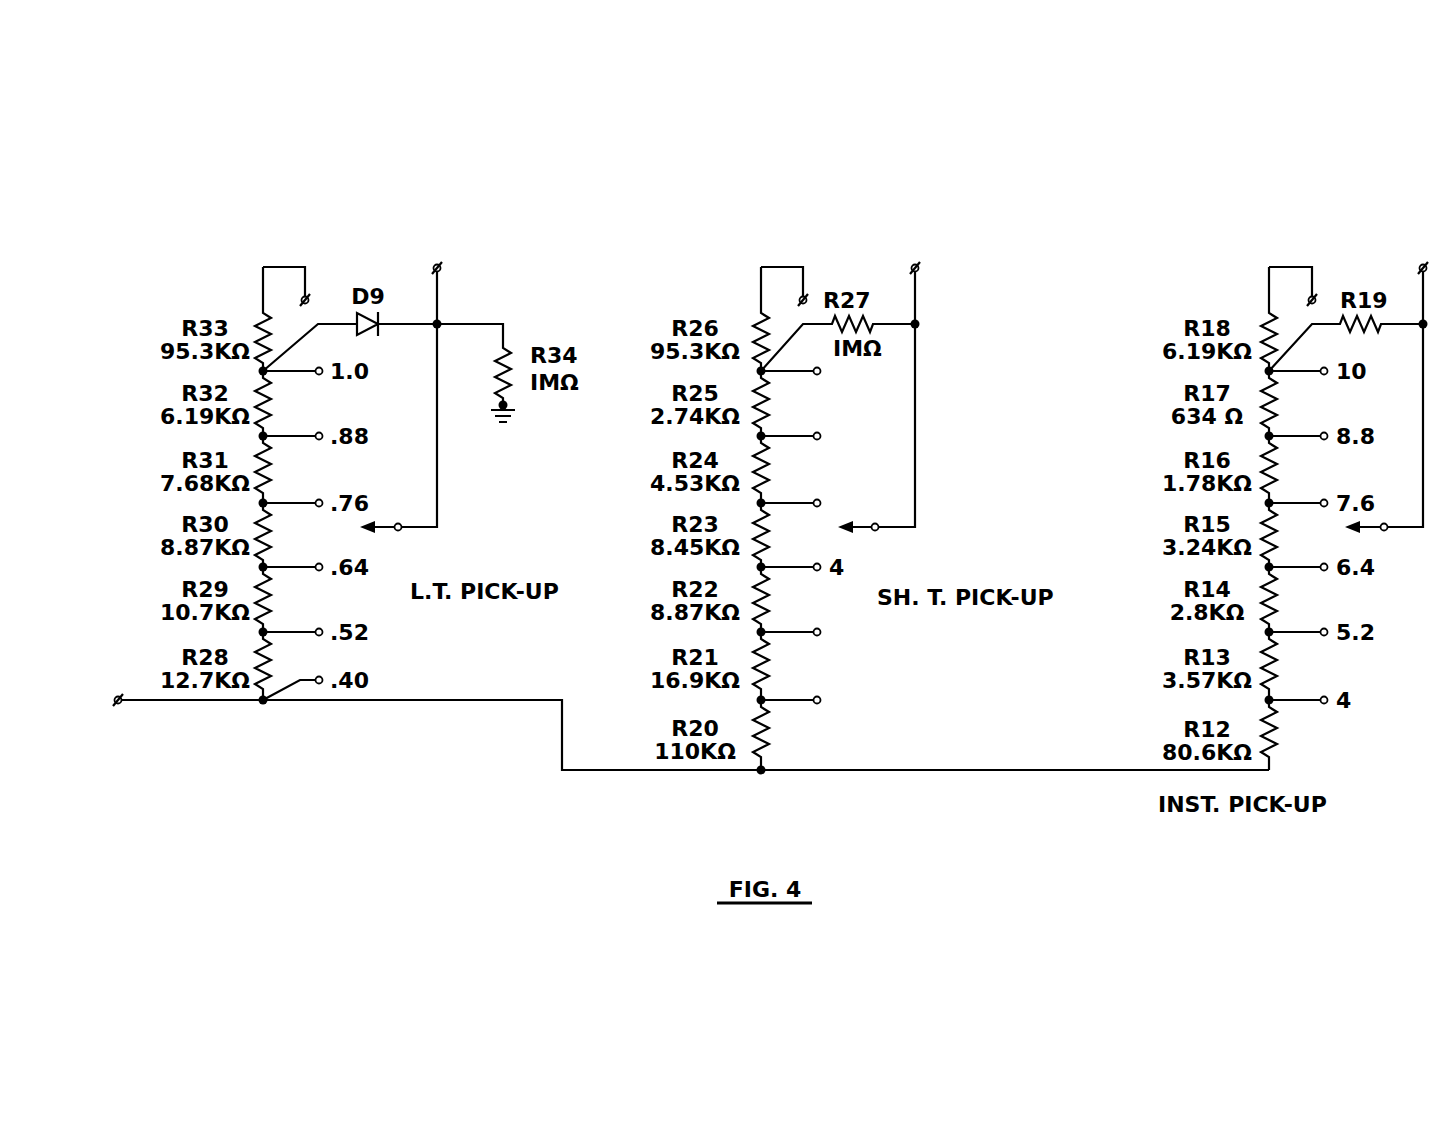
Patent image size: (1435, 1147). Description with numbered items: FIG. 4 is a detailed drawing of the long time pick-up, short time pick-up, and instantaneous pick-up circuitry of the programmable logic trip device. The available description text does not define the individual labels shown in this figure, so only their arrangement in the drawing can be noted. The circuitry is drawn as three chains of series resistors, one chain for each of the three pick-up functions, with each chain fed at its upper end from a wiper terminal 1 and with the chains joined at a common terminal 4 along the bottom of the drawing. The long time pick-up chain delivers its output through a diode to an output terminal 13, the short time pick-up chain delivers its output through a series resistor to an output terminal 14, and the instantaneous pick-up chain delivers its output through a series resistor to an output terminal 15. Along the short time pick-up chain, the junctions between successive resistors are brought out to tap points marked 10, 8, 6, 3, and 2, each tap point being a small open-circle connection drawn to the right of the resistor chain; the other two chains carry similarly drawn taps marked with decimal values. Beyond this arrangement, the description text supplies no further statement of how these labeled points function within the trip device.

The potentiometer wiper terminal 1 is at (790, 299).
The common terminal 4 is at (682, 729).
The long-time pick-up output terminal 13 is at (406, 385).
The short-time pick-up output terminal 14 is at (884, 385).
The instantaneous pick-up output terminal 15 is at (1390, 385).
The tap 10 is at (810, 371).
The tap 8 is at (802, 436).
The tap 6 is at (802, 503).
The tap 3 is at (802, 632).
The tap 2 is at (802, 700).